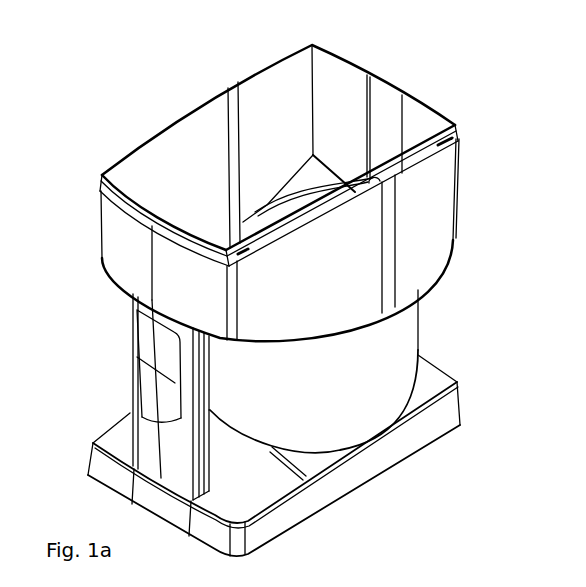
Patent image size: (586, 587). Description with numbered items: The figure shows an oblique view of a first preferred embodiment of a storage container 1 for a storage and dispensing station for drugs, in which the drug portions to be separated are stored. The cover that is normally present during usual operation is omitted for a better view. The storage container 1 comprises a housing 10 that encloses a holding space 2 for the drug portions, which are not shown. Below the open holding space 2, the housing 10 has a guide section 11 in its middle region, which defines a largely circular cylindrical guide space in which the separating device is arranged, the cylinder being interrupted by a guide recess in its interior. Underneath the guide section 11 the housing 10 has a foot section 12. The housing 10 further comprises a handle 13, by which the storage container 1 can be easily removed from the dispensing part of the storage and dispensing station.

The storage container 1 is at (460, 90).
The holding space 2 is at (193, 167).
The housing 10 is at (428, 215).
The guide section 11 is at (344, 370).
The foot section 12 is at (385, 455).
The handle 13 is at (158, 416).